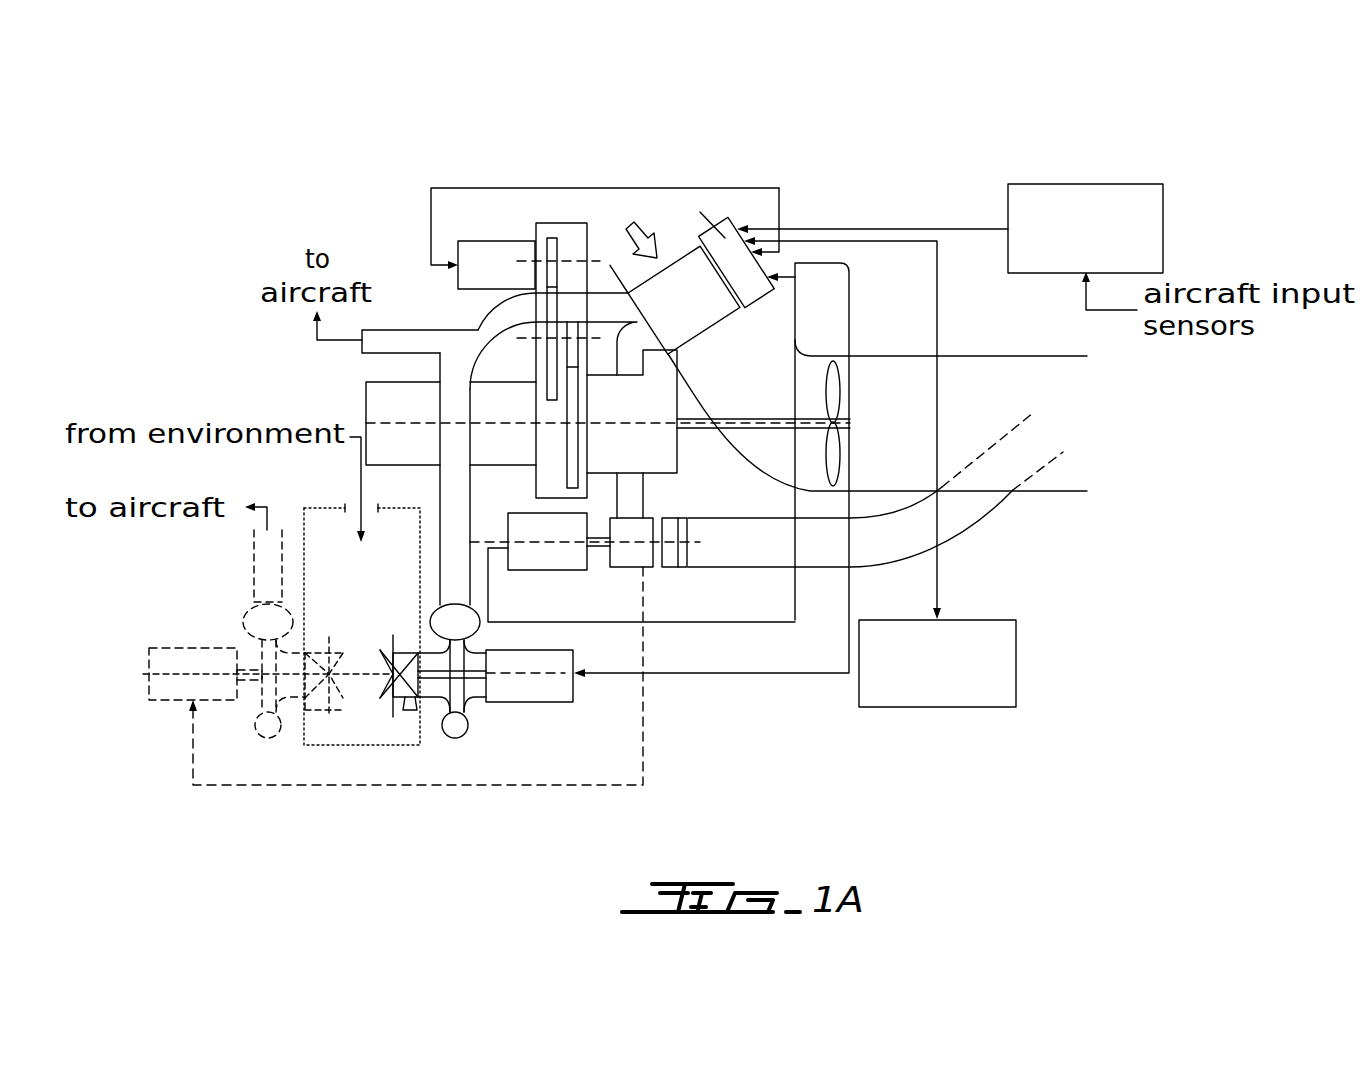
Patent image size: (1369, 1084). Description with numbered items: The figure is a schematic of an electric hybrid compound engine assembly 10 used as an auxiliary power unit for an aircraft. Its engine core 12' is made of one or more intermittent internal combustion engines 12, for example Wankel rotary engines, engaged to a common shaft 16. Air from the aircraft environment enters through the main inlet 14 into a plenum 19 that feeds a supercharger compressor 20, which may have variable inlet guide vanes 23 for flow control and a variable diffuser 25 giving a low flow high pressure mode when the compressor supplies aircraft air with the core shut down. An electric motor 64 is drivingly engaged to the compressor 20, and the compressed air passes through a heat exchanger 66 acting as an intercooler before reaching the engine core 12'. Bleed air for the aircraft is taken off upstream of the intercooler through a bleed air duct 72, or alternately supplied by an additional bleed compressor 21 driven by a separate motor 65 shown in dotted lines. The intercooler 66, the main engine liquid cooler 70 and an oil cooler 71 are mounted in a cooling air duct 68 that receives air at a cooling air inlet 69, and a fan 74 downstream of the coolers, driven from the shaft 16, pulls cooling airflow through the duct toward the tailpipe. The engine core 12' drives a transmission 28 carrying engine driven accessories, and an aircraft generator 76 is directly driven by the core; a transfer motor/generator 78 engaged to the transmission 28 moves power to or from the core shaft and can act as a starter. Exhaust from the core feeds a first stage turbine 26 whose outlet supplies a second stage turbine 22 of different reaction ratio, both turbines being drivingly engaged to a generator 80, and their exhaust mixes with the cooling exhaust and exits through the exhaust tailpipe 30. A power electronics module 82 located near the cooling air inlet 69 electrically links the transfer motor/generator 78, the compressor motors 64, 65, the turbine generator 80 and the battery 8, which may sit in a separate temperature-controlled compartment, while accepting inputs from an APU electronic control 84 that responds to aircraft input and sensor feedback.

The battery 8 is at (1016, 663).
The electric hybrid compound engine assembly 10 is at (285, 188).
The intermittent internal combustion engine 12 is at (689, 608).
The engine core 12' is at (689, 608).
The main inlet 14 is at (355, 508).
The common shaft 16 is at (610, 425).
The plenum 19 is at (328, 609).
The supercharger compressor 20 is at (470, 627).
The bleed compressor 21 is at (287, 685).
The second stage turbine 22 is at (683, 570).
The variable inlet guide vanes 23 is at (393, 707).
The variable diffuser 25 is at (493, 700).
The first stage turbine 26 is at (658, 567).
The transmission 28 is at (566, 233).
The exhaust tailpipe 30 is at (1047, 436).
The electric motor 64 is at (560, 693).
The separate motor 65 is at (160, 700).
The heat exchanger 66 is at (848, 304).
The cooling air duct 68 is at (760, 357).
The cooling air inlet 69 is at (630, 223).
The main engine liquid cooler 70 is at (848, 304).
The oil cooler 71 is at (688, 270).
The bleed air duct 72 is at (398, 327).
The fan 74 is at (833, 362).
The aircraft generator 76 is at (377, 395).
The transfer motor/generator 78 is at (473, 252).
The generator 80 is at (575, 563).
The power electronics module 82 is at (727, 220).
The APU electronic control 84 is at (1085, 184).